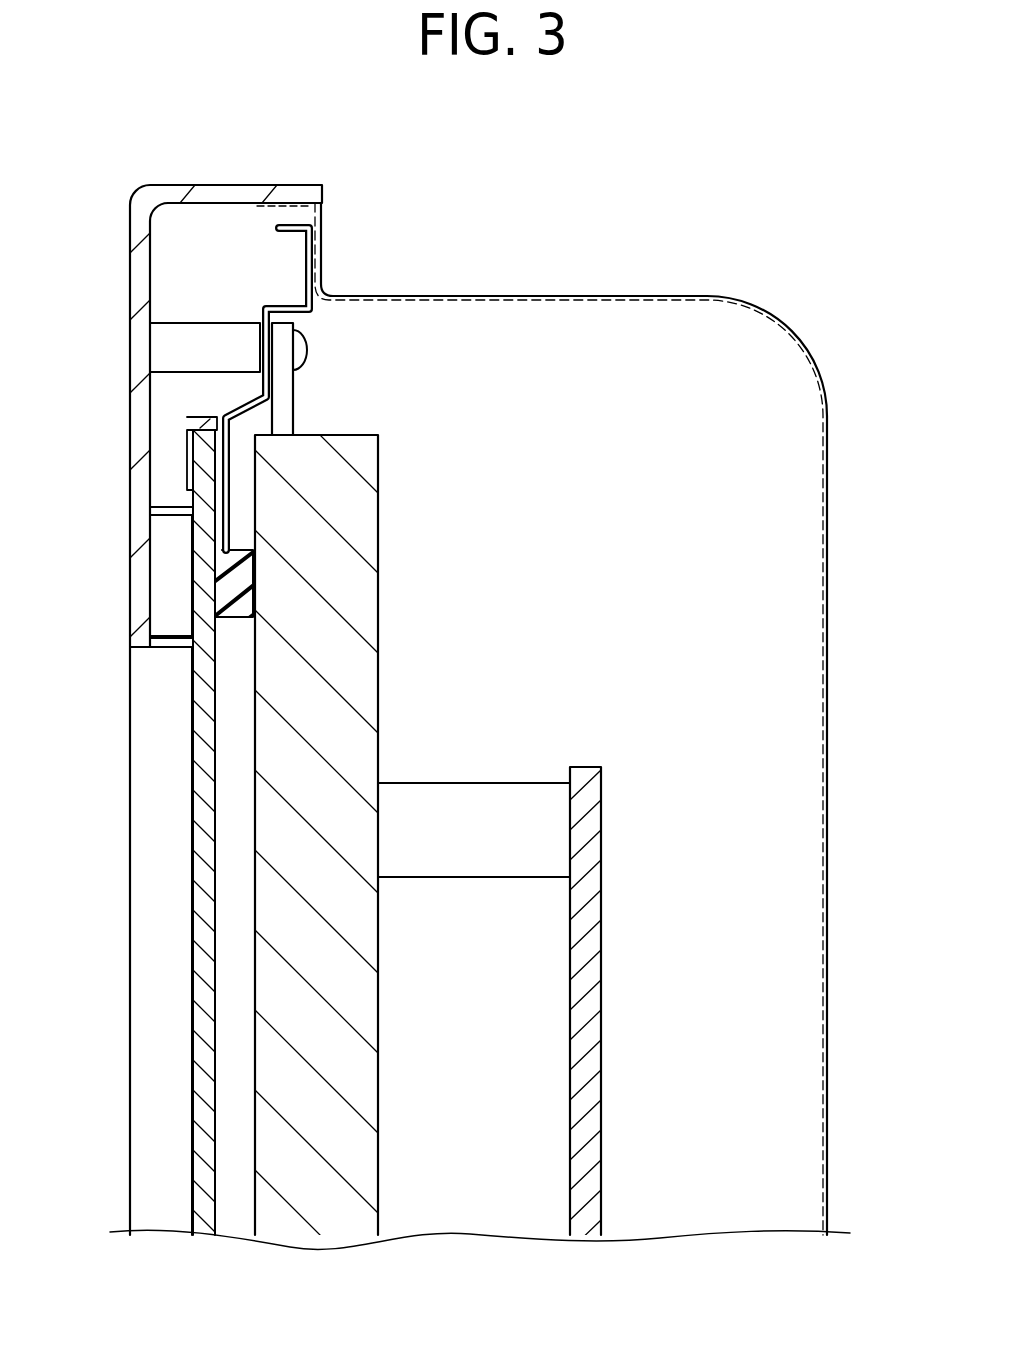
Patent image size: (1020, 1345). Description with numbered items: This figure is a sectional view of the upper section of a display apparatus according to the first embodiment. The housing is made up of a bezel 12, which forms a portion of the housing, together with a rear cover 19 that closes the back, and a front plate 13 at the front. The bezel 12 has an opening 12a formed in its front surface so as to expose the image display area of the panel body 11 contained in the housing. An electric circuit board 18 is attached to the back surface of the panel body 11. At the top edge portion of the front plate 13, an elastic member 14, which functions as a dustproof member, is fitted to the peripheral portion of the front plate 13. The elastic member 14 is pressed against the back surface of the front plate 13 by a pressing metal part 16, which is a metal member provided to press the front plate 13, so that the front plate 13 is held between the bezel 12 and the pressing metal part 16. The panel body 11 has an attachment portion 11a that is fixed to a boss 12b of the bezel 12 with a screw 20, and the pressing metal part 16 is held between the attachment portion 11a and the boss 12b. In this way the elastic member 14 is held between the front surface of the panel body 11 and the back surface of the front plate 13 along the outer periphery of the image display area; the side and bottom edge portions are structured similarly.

The panel body 11 is at (297, 1045).
The attachment portion 11a is at (290, 412).
The bezel 12 is at (138, 246).
The opening 12a is at (160, 778).
The boss 12b is at (193, 362).
The front plate 13 is at (207, 890).
The elastic member 14 is at (215, 582).
The pressing metal part 16 is at (286, 308).
The electric circuit board 18 is at (604, 935).
The rear cover 19 is at (829, 632).
The screw 20 is at (306, 352).